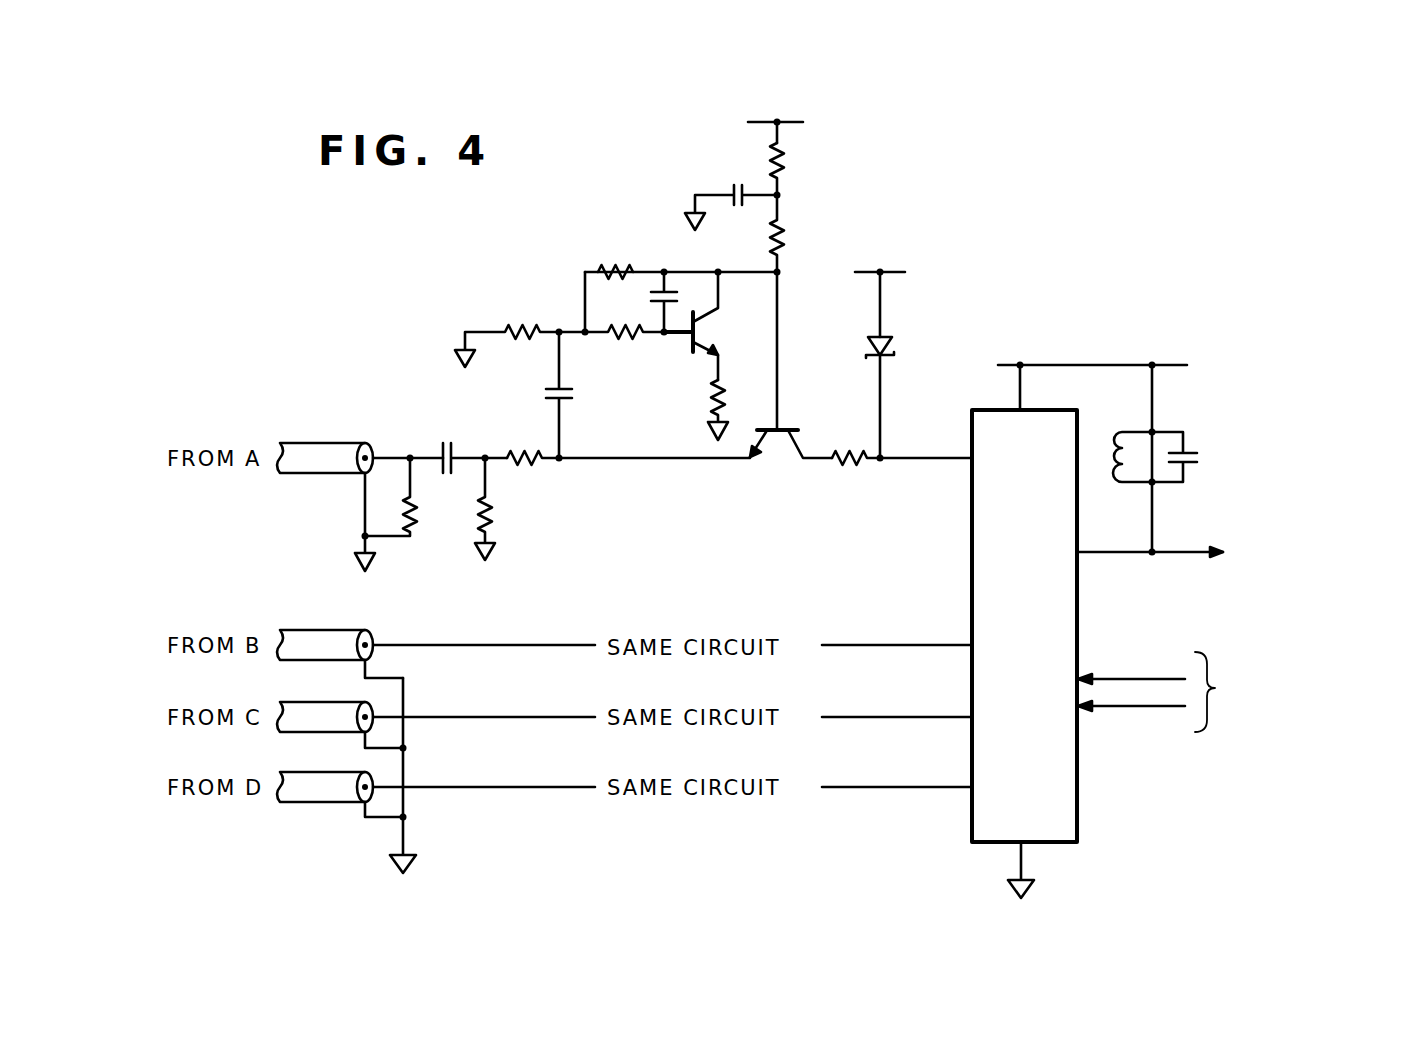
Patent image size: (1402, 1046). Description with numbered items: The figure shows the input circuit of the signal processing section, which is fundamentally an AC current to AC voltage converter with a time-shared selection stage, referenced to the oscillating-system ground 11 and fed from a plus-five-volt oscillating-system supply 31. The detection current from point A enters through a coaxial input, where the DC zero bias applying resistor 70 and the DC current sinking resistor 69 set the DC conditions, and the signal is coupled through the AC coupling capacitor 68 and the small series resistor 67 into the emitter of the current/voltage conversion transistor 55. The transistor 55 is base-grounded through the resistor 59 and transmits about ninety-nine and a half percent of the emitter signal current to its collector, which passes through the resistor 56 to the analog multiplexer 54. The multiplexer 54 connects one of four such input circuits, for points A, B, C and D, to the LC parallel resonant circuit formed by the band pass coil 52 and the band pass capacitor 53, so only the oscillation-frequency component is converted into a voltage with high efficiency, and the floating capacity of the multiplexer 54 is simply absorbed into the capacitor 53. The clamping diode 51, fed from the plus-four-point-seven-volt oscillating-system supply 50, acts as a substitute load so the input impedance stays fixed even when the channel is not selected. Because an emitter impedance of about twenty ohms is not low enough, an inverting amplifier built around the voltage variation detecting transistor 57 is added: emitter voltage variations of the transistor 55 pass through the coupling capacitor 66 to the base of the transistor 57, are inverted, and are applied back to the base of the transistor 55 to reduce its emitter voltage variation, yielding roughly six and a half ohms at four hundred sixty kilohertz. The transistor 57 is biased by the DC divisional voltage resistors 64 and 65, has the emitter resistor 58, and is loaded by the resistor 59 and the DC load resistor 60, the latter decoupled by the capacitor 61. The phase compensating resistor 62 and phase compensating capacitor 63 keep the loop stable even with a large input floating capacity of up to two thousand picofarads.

The ground (oscillation system) 11 is at (355, 557).
The +5V oscillation system power supply 31 is at (777, 122).
The +4.7 V supply of the oscillating system 50 is at (881, 271).
The clamping diode 51 is at (888, 346).
The band pass coil 52 is at (1112, 447).
The band pass capacitor 53 is at (1198, 459).
The analog multiplexer 54 is at (1080, 632).
The current/voltage conversion transistor 55 is at (779, 449).
The resistor 56 is at (855, 471).
The voltage variation detecting transistor 57 is at (712, 331).
The resistor 58 is at (712, 396).
The AC and DC load resistor / base ground resistor 59 is at (790, 238).
The DC load resistor 60 is at (790, 170).
The decoupling capacitor 61 is at (738, 184).
The phase compensating resistor 62 is at (626, 339).
The phase compensating capacitor 63 is at (664, 290).
The DC divisional voltage resistor 64 is at (615, 266).
The DC divisional voltage resistor 65 is at (520, 327).
The coupling capacitor 66 is at (547, 393).
The resistor 67 is at (537, 466).
The AC coupling capacitor 68 is at (443, 442).
The DC current sinking resistor 69 is at (492, 511).
The DC zero bias applying resistor 70 is at (415, 502).